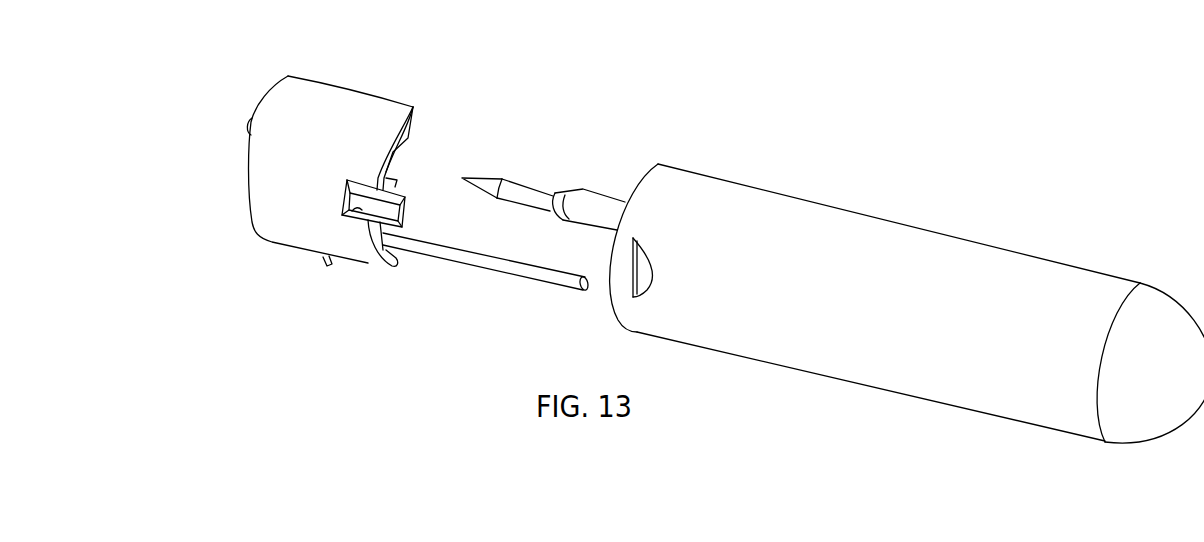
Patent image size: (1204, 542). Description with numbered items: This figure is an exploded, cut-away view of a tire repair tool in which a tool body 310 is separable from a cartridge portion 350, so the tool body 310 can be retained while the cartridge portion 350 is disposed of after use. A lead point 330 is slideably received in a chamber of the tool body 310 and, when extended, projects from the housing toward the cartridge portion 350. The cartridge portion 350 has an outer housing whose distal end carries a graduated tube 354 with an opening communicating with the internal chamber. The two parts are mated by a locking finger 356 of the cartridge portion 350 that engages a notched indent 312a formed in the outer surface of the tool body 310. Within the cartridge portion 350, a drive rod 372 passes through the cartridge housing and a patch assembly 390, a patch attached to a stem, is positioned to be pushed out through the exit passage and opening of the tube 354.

The tool body 310 is at (1051, 395).
The notched indent 312a is at (650, 257).
The lead point 330 is at (540, 188).
The cartridge portion 350 is at (340, 132).
The graduated tube 354 is at (255, 120).
The locking finger 356 is at (358, 210).
The drive rod 372 is at (475, 263).
The patch assembly 390 is at (323, 261).